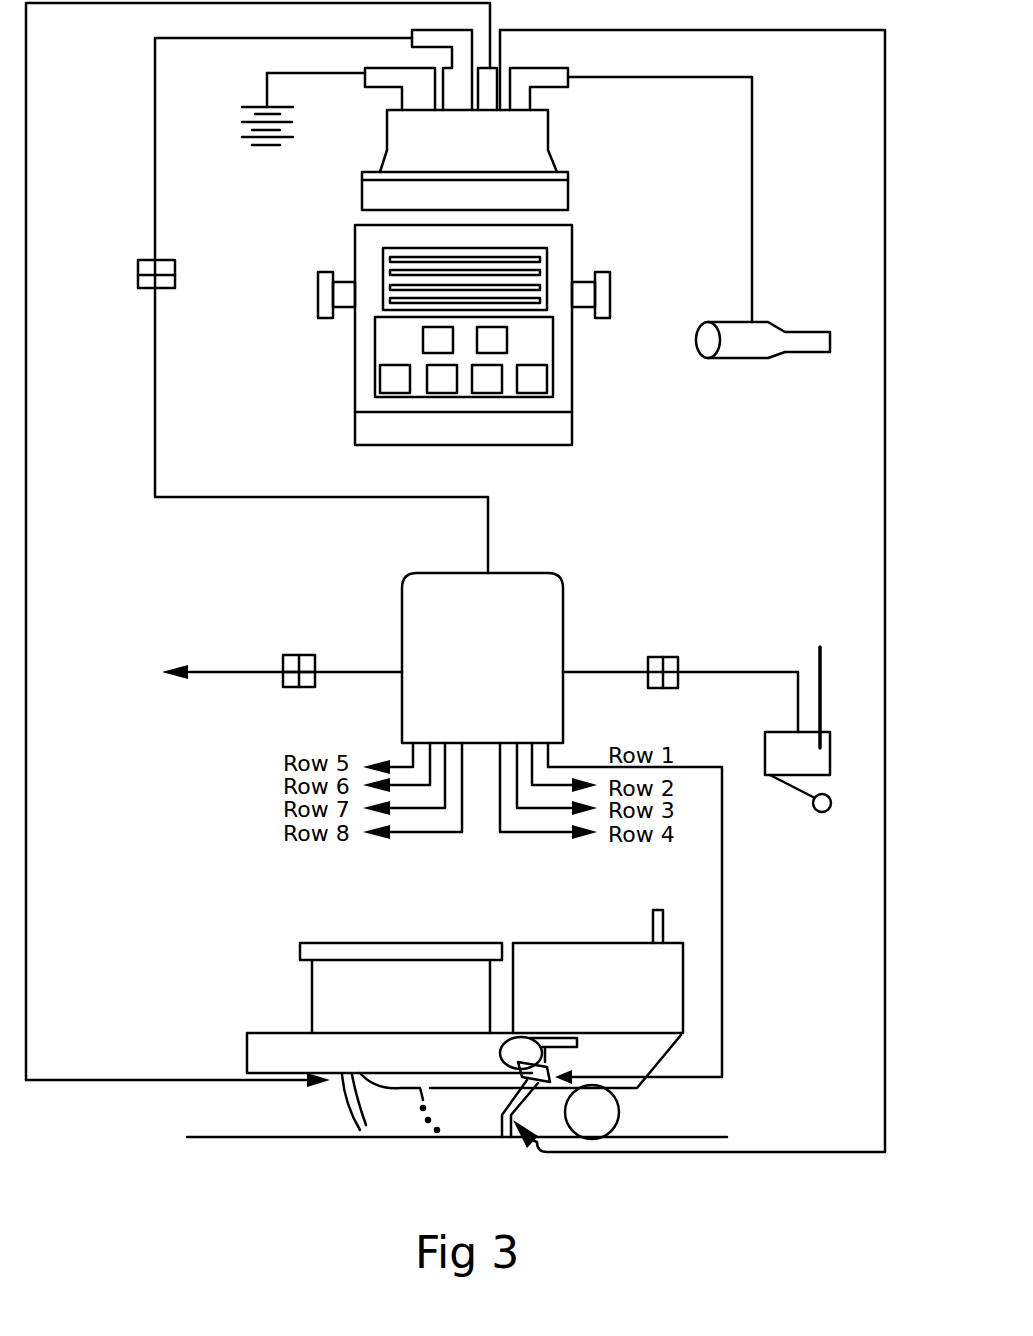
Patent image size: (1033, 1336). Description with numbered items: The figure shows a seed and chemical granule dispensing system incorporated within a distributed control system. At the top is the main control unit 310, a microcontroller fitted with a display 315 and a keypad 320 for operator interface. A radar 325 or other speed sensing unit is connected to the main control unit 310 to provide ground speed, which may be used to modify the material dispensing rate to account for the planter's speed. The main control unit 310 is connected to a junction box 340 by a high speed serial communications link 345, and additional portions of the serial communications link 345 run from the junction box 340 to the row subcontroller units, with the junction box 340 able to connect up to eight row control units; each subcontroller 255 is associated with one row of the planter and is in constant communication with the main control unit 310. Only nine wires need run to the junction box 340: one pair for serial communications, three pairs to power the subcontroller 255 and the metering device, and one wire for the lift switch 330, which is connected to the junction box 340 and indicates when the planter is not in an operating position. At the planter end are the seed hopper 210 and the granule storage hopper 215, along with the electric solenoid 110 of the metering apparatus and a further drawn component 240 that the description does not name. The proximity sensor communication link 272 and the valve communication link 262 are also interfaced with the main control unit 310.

The electric solenoid 110 is at (388, 1065).
The seed hopper 210 is at (338, 995).
The granule storage hopper 215 is at (608, 955).
The pump 240 is at (568, 1043).
The subcontroller 255 is at (552, 1065).
The valve communication link 262 is at (870, 495).
The proximity sensor communication link 272 is at (48, 878).
The main control unit 310 is at (515, 130).
The display 315 is at (518, 275).
The keypad 320 is at (397, 342).
The radar 325 is at (753, 348).
The lift switch 330 is at (703, 712).
The junction box 340 is at (508, 600).
The serial communications link 345 is at (170, 432).